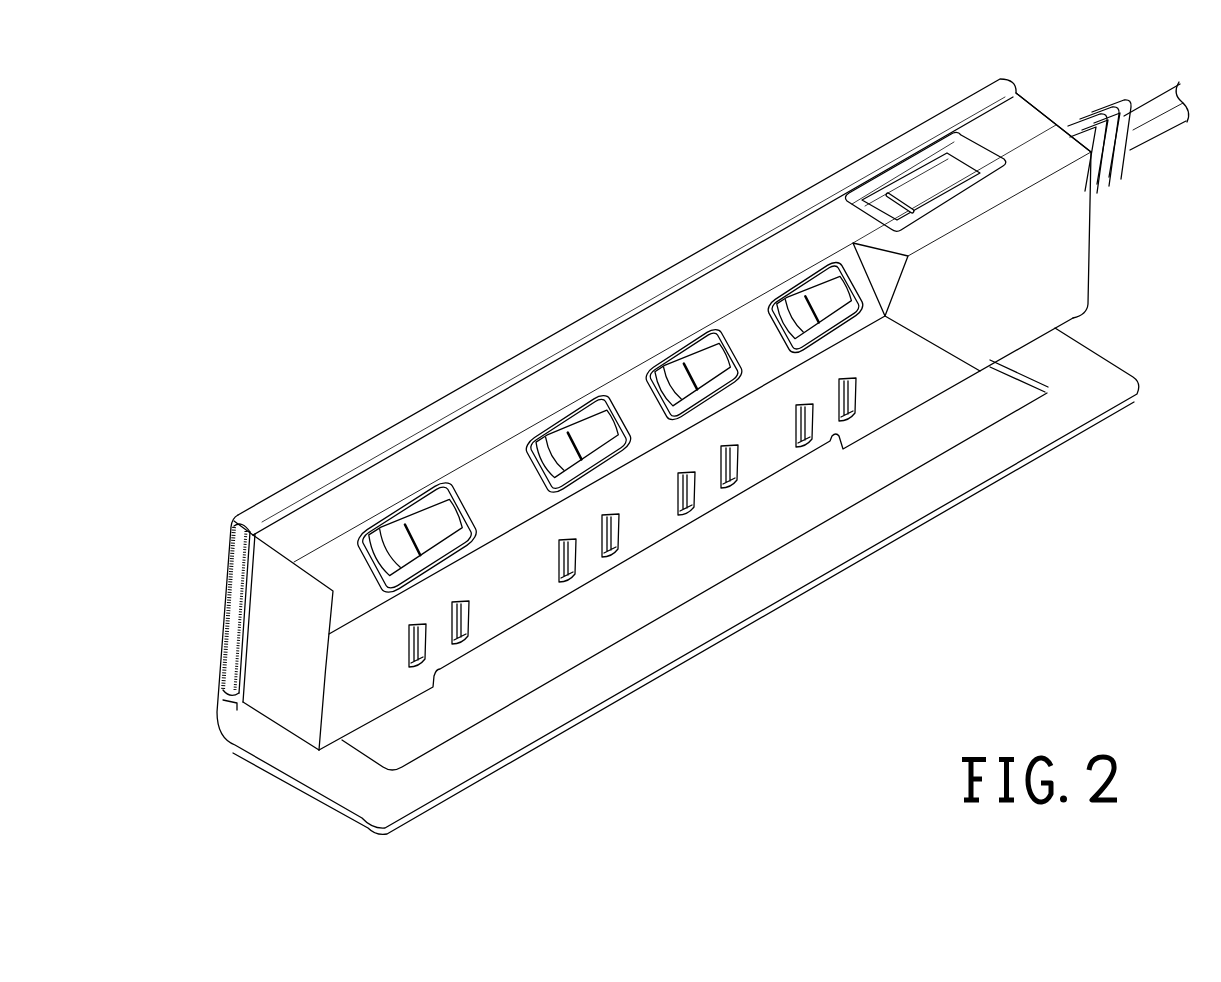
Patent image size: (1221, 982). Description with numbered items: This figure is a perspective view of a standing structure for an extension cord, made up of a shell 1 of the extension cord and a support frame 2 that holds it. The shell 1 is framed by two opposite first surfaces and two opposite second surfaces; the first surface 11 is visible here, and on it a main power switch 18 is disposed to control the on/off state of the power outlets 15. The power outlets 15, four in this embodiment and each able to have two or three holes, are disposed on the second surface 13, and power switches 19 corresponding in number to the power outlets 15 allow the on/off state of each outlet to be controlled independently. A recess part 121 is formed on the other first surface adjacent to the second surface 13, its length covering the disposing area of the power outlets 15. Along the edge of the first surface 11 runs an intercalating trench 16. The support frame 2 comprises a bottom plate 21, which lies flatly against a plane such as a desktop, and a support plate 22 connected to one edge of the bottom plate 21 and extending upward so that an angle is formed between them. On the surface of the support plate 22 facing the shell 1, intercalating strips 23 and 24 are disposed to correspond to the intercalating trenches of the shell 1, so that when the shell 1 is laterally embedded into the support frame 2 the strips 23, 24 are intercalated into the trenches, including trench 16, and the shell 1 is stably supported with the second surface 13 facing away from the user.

The shell 1 is at (1098, 247).
The support frame 2 is at (808, 602).
The first surface 11 is at (704, 428).
The recess part 121 is at (547, 613).
The second surface 13 is at (993, 310).
The power outlet 15 is at (856, 418).
The intercalating trench 16 is at (613, 326).
The main power switch 18 is at (912, 160).
The power switch 19 is at (833, 308).
The bottom plate 21 is at (673, 648).
The support plate 22 is at (218, 612).
The intercalating strip 23 is at (237, 529).
The intercalating strip 24 is at (253, 715).